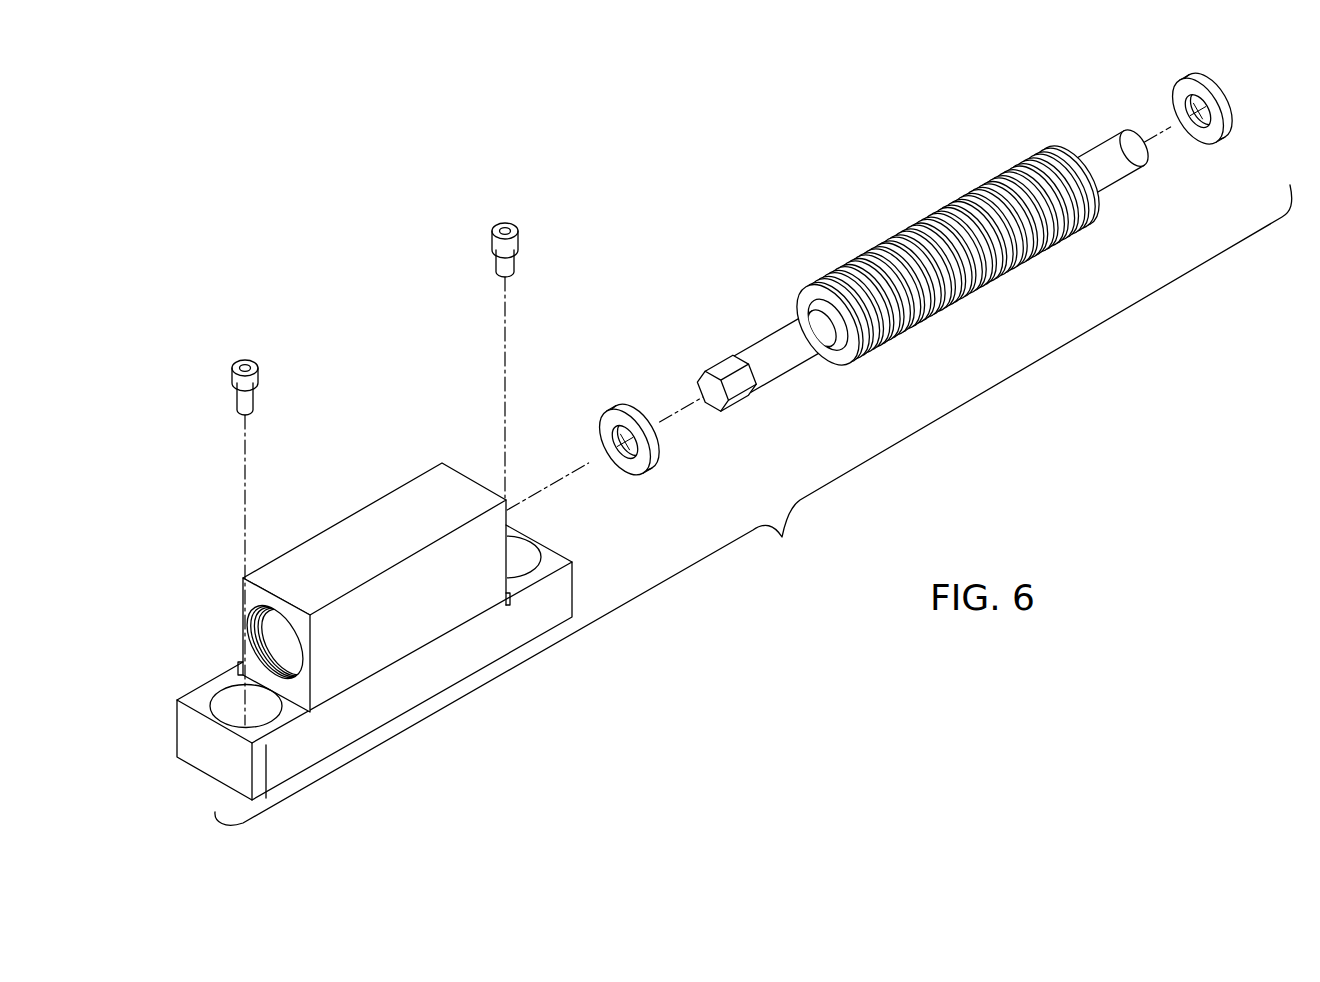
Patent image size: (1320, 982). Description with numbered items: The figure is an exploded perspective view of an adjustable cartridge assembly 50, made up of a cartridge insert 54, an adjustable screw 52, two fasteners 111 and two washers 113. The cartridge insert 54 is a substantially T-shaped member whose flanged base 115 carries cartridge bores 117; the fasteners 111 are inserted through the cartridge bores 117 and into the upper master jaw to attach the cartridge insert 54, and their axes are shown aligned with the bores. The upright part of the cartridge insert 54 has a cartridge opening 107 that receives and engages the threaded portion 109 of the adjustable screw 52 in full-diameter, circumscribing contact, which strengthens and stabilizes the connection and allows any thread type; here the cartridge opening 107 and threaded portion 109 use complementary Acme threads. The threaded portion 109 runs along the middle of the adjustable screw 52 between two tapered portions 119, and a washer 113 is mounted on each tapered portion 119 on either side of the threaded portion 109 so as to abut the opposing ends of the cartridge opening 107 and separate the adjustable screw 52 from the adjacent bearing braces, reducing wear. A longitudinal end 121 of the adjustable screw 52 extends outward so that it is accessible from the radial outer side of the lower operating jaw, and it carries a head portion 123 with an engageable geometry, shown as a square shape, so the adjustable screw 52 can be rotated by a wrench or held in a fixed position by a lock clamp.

The adjustable cartridge assembly 50 is at (753, 505).
The adjustable screw 52 is at (847, 317).
The cartridge insert 54 is at (337, 586).
The cartridge opening 107 is at (260, 630).
The threaded portion 109 is at (973, 192).
The fastener 111 is at (250, 398).
The washer 113 is at (630, 411).
The flanged base 115 is at (550, 605).
The cartridge bore 117 is at (230, 703).
The tapered portion 119 is at (928, 270).
The longitudinal end 121 is at (752, 346).
The head portion 123 is at (735, 396).